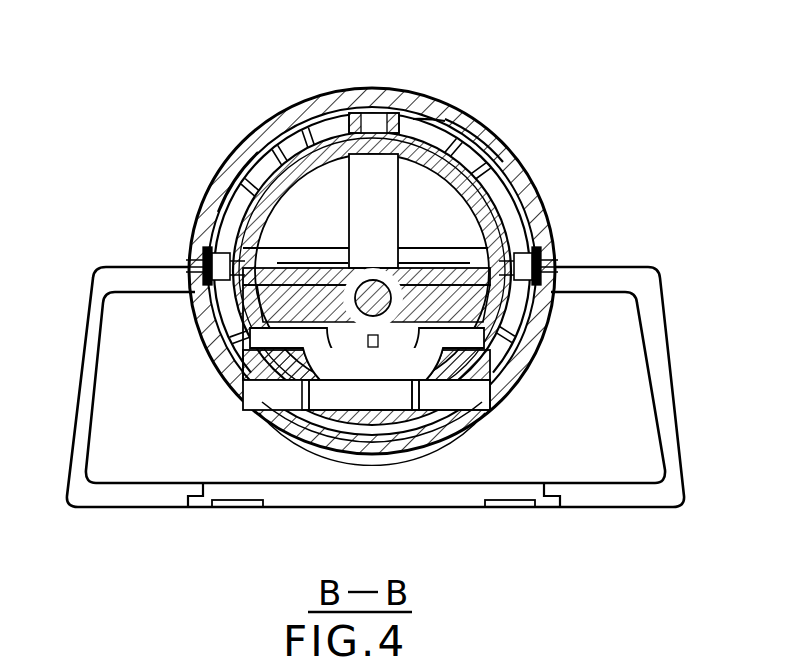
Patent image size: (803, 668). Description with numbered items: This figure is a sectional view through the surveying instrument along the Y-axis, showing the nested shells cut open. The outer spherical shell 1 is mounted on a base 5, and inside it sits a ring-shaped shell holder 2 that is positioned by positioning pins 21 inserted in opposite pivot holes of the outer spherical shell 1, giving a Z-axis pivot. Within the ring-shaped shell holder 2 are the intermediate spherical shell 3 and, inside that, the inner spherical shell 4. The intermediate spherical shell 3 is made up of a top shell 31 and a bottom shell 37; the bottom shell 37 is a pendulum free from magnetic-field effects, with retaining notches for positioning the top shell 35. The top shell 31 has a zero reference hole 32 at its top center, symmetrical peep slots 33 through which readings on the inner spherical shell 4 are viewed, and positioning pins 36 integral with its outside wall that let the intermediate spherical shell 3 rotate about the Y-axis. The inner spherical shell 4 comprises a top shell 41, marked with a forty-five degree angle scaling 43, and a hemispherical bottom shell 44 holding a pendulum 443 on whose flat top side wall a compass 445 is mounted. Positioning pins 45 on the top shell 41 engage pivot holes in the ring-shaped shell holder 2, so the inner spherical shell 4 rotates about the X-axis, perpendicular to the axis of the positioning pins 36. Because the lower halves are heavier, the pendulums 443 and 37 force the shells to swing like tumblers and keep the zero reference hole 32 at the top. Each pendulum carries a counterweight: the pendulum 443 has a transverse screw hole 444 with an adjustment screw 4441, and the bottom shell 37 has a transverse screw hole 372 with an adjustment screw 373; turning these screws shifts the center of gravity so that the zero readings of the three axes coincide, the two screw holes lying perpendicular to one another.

The outer spherical shell 1 is at (537, 181).
The ring-shaped shell holder 2 is at (553, 219).
The positioning pins 21 is at (560, 241).
The intermediate spherical shell 3 is at (368, 168).
The top shell 31 is at (503, 173).
The zero reference hole 32 is at (377, 111).
The peep slots 33 is at (435, 133).
The top shell 35 is at (484, 160).
The positioning pins 36 is at (366, 282).
The bottom shell 37 is at (501, 396).
The transverse screw hole 372 is at (471, 393).
The adjustment screw 373 is at (388, 394).
The inner spherical shell 4 is at (282, 117).
The top shell 41 is at (304, 144).
The 45° angle scaling 43 is at (236, 164).
The hemispherical bottom shell 44 is at (494, 311).
The adjustment screw 4441 is at (484, 365).
The pendulum 443 is at (238, 343).
The transverse screw hole 444 is at (265, 413).
The compass 445 is at (234, 308).
The positioning pins 45 is at (206, 238).
The base 5 is at (642, 268).